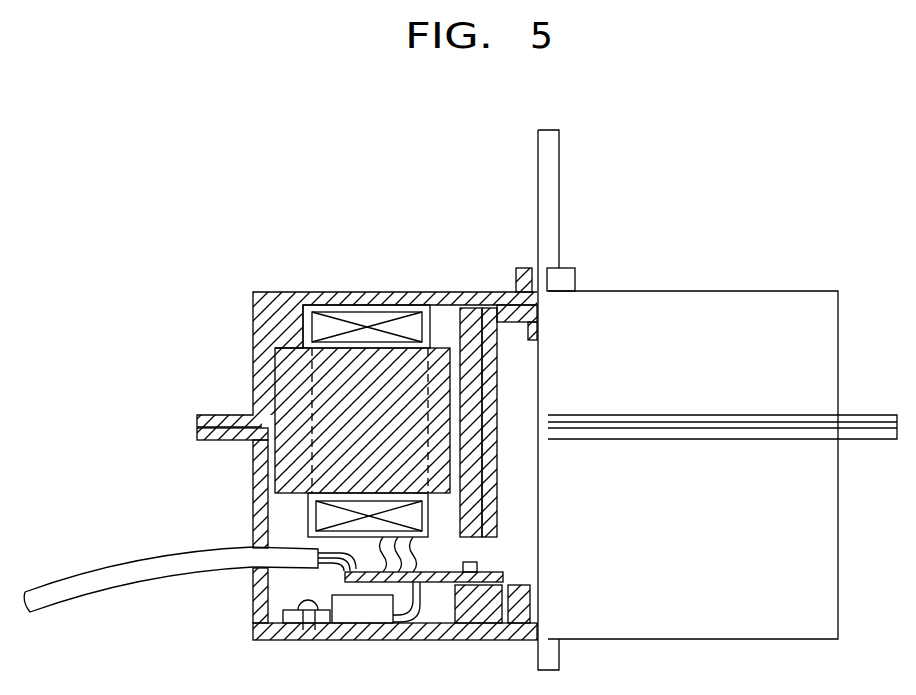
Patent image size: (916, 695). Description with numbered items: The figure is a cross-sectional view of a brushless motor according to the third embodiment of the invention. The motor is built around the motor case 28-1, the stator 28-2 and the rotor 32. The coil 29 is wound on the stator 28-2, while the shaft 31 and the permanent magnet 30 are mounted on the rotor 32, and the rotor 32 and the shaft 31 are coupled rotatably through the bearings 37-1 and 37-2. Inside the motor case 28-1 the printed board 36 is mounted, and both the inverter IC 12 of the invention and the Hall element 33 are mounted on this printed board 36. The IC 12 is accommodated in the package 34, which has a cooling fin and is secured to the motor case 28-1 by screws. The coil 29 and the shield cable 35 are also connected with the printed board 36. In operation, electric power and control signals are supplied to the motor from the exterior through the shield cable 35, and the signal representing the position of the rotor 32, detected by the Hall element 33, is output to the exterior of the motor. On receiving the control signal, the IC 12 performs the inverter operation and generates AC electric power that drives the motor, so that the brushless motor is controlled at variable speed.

The inverter IC 12 is at (360, 615).
The motor case 28-1 is at (253, 510).
The stator 28-2 is at (253, 374).
The coil 29 is at (375, 314).
The permanent magnet 30 is at (466, 322).
The shaft 31 is at (559, 212).
The rotor 32 is at (495, 320).
The Hall element 33 is at (474, 562).
The package of the inverter IC 34 is at (293, 613).
The shield cable 35 is at (138, 583).
The printed board 36 is at (443, 600).
The bearing 37-1 is at (520, 612).
The bearing 37-2 is at (527, 292).